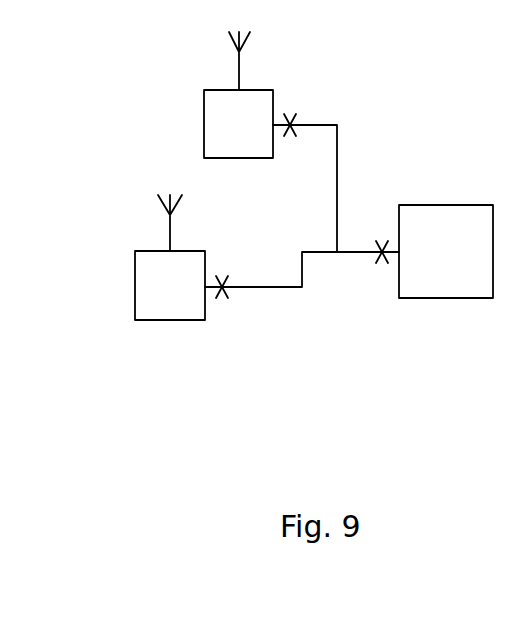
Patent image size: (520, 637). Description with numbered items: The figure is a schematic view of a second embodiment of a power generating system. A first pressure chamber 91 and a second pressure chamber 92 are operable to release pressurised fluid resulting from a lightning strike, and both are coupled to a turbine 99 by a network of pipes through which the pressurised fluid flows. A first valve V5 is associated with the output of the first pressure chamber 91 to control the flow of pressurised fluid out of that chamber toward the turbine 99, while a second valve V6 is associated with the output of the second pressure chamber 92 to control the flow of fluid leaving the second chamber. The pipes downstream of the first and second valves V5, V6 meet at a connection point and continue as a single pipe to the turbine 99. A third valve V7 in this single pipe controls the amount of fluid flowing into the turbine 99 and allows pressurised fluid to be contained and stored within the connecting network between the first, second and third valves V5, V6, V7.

The first pressure chamber 91 is at (204, 125).
The second pressure chamber 92 is at (170, 320).
The turbine 99 is at (457, 298).
The first valve V5 is at (308, 102).
The second valve V6 is at (228, 310).
The third valve V7 is at (377, 277).